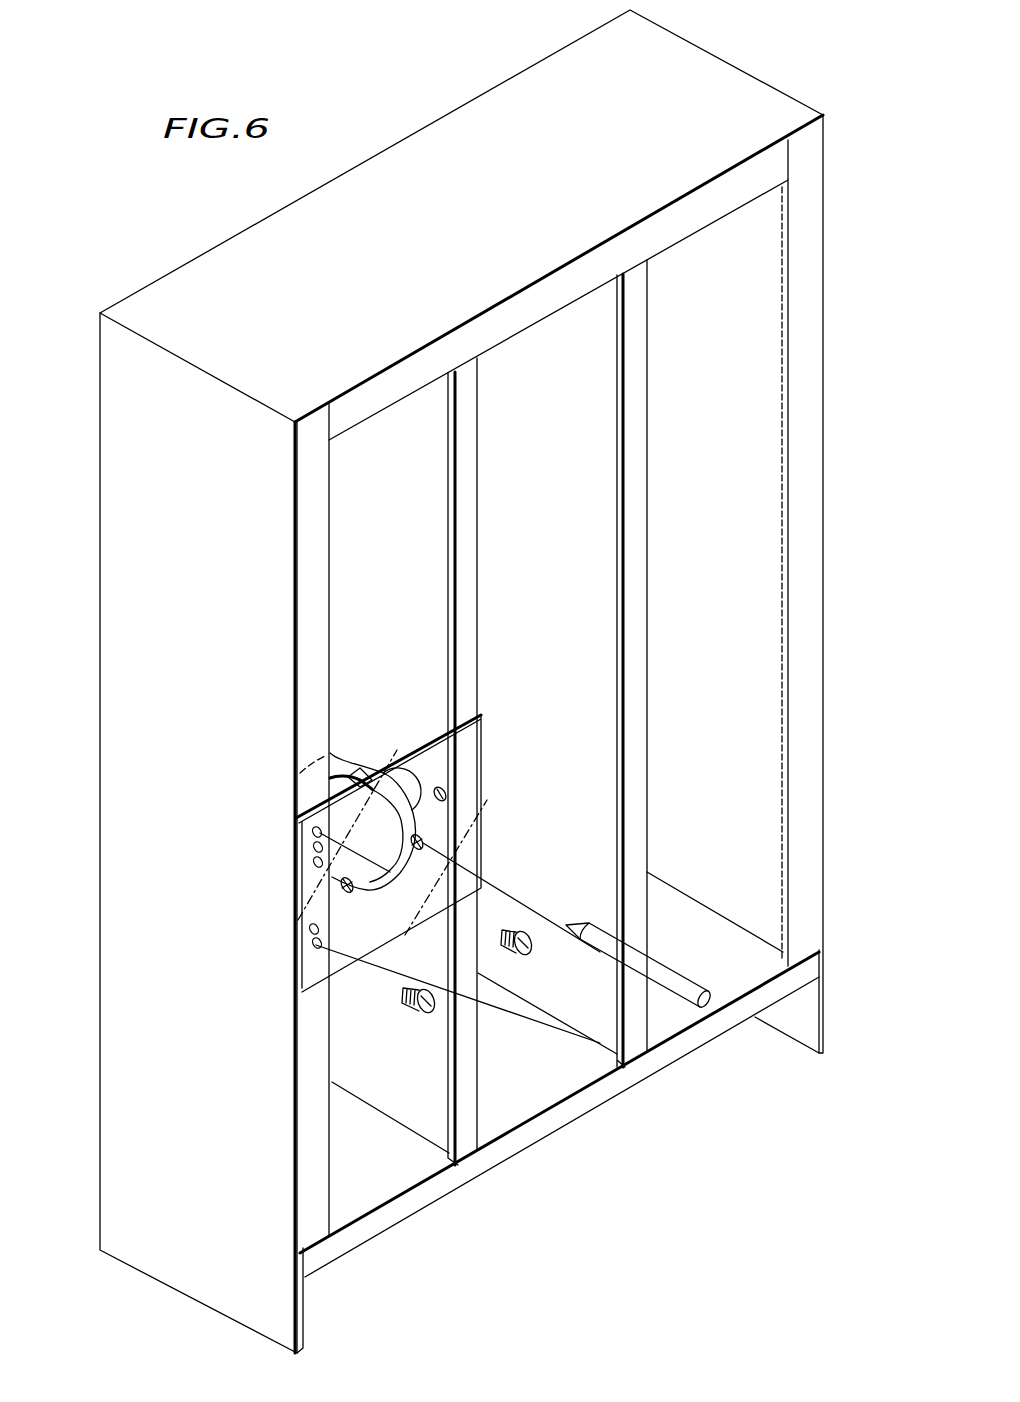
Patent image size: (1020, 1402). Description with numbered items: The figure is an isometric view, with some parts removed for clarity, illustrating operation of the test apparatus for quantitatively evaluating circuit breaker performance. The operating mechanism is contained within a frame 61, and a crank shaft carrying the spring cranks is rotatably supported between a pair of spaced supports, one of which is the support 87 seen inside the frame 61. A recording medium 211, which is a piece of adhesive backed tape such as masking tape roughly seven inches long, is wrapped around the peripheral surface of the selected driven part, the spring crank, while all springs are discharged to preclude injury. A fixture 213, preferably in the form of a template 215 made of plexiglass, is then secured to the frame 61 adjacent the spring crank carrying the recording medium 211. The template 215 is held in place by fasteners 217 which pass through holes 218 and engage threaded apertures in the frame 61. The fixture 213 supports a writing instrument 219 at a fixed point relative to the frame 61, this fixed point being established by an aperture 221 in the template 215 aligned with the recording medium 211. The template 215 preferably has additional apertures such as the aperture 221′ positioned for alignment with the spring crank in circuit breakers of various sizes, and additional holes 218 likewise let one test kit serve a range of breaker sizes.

The frame 61 is at (117, 590).
The support 87 is at (467, 522).
The recording medium 211 is at (383, 793).
The fixture 213 is at (282, 872).
The template 215 is at (482, 741).
The fasteners 217 is at (434, 1008).
The holes 218 is at (313, 947).
The writing instrument 219 is at (665, 978).
The aperture 221 is at (424, 840).
The additional aperture 221′ is at (350, 892).